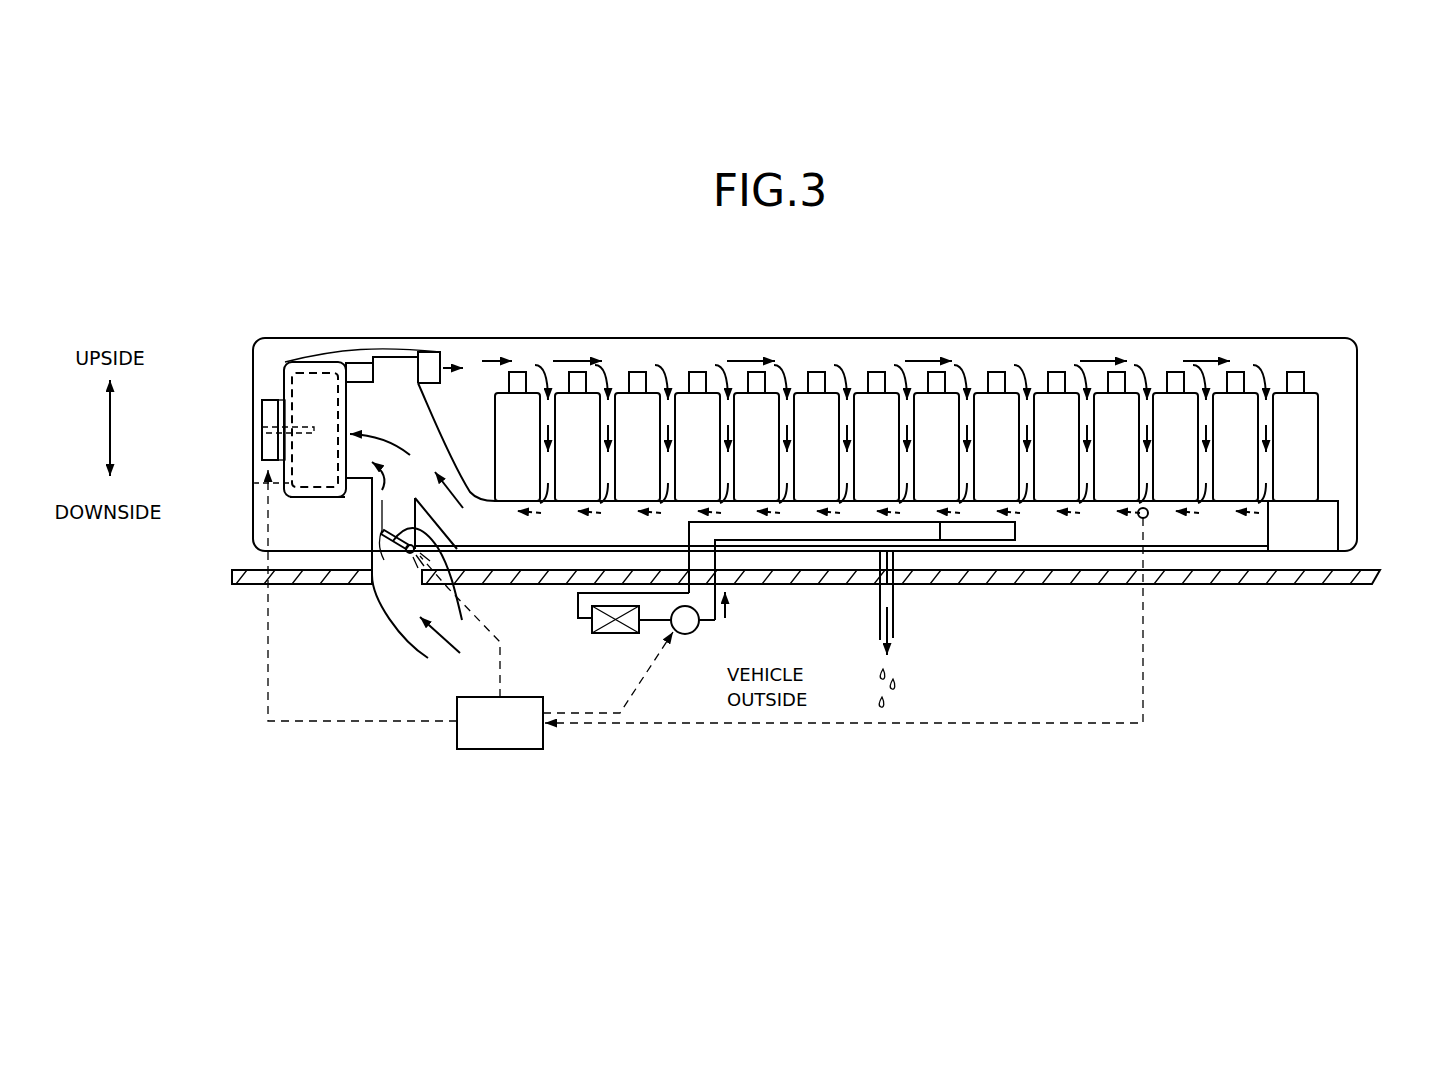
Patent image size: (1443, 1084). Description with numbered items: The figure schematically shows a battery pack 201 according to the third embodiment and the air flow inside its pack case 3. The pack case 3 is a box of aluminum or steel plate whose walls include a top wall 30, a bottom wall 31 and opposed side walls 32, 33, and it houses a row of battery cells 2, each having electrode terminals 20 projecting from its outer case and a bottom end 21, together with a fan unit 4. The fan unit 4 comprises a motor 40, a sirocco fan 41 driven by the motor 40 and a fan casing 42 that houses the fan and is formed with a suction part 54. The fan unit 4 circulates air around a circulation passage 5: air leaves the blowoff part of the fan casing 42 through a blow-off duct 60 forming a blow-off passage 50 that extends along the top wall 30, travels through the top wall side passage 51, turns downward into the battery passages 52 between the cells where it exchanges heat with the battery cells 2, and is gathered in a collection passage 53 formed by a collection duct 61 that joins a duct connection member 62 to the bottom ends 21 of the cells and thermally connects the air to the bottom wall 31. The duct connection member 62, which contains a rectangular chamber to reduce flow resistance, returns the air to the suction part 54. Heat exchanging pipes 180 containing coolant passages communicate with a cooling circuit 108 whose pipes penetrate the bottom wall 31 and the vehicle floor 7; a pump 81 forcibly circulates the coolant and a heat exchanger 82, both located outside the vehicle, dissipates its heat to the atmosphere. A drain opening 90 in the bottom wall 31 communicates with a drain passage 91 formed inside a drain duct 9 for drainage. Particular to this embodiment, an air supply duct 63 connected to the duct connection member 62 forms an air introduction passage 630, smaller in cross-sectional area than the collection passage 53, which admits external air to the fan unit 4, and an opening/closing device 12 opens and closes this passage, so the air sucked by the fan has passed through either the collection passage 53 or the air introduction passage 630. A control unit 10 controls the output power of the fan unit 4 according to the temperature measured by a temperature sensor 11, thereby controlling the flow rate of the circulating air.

The battery cell 2 is at (908, 389).
The electrode terminal 20 is at (1171, 393).
The battery pack 201 is at (1111, 316).
The pack case 3 is at (250, 527).
The top wall 30 is at (929, 338).
The bottom wall 31 is at (1020, 550).
The side wall 32 is at (253, 460).
The side wall 33 is at (1357, 413).
The bottom end 21 is at (1043, 505).
The fan unit 4 is at (313, 355).
The motor 40 is at (271, 400).
The sirocco fan 41 is at (253, 483).
The fan casing 42 is at (310, 498).
The circulation passage 5 is at (450, 362).
The blow-off passage 50 is at (315, 392).
The top wall side passage 51 is at (857, 360).
The battery passage 52 is at (1266, 505).
The collection passage 53 is at (1105, 532).
The suction part 54 is at (370, 364).
The blow-off duct 60 is at (442, 351).
The collection duct 61 is at (1338, 525).
The duct connection member 62 is at (386, 355).
The air supply duct 63 is at (378, 598).
The air introduction passage 630 is at (390, 636).
The floor 7 is at (1225, 585).
The drain duct 9 is at (897, 608).
The drain opening 90 is at (867, 545).
The drain passage 91 is at (883, 608).
The heat exchanging pipe 180 is at (967, 540).
The cooling circuit 108 is at (575, 600).
The pump 81 is at (686, 634).
The heat exchanger 82 is at (612, 633).
The control unit 10 is at (500, 749).
The temperature sensor 11 is at (1148, 518).
The opening/closing device 12 is at (450, 577).